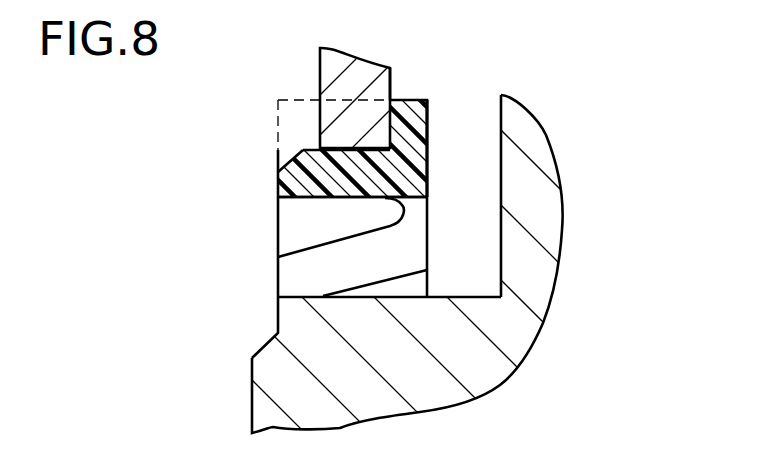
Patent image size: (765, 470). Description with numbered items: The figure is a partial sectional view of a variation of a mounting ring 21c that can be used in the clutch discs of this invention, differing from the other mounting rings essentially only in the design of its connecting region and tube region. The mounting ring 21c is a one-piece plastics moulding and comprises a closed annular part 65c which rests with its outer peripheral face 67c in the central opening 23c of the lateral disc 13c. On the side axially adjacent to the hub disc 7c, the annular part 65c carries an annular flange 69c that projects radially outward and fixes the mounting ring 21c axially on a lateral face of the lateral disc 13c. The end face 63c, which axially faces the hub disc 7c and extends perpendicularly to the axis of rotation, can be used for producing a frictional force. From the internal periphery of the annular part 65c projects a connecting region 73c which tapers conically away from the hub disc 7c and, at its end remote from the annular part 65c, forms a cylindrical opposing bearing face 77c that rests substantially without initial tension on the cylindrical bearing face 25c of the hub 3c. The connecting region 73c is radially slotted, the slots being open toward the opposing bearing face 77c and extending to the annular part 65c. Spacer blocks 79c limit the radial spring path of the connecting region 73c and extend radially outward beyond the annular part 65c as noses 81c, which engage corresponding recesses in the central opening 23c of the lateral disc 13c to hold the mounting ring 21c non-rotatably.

The hub 3c is at (483, 350).
The hub disc 7c is at (530, 133).
The lateral disc 13c is at (357, 82).
The mounting ring 21c is at (260, 175).
The central opening 23c is at (405, 190).
The cylindrical bearing face 25c is at (466, 298).
The end face 63c is at (428, 140).
The annular part 65c is at (292, 150).
The outer peripheral face 67c is at (313, 147).
The annular flange 69c is at (428, 112).
The connecting region 73c is at (347, 267).
The opposing bearing face 77c is at (298, 298).
The spacer blocks 79c is at (280, 98).
The noses 81c is at (392, 80).